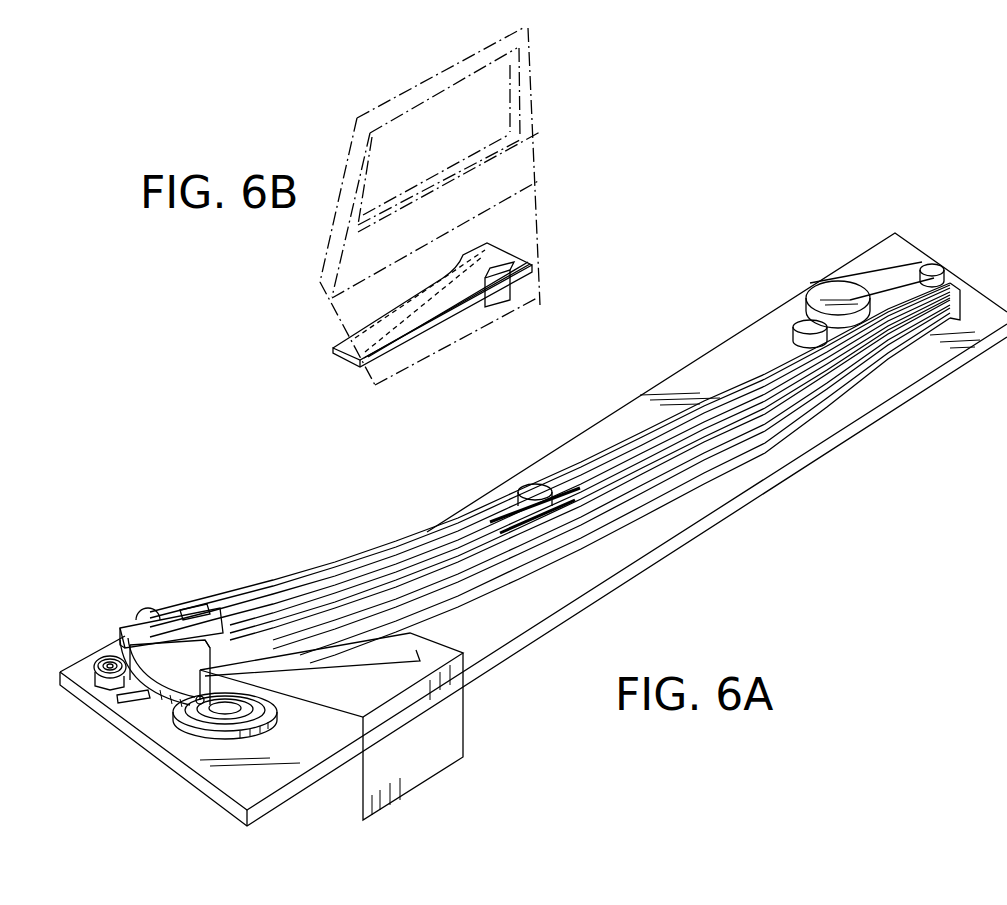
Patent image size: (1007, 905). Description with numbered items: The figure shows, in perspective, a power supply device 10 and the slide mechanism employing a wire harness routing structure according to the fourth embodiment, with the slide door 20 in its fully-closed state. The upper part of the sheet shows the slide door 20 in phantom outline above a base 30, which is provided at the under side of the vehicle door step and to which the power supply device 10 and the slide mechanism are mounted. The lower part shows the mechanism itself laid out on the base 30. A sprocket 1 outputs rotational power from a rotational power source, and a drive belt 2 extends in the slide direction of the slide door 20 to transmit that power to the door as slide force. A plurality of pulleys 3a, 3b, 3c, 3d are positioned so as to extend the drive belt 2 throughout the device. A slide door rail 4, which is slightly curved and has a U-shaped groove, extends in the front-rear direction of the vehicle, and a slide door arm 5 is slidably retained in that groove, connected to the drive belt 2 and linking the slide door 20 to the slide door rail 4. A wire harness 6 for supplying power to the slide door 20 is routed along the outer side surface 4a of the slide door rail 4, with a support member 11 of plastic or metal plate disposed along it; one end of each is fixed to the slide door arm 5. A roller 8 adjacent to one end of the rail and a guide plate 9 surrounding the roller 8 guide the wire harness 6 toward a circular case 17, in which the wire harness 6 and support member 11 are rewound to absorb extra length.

In FIG. 6A, the sprocket 1 is at (830, 292).
In FIG. 6A, the drive belt 2 is at (613, 463).
In FIG. 6A, the pulley 3a is at (148, 610).
In FIG. 6A, the pulley 3b is at (530, 490).
In FIG. 6A, the pulley 3c is at (808, 325).
In FIG. 6A, the pulley 3d is at (933, 268).
In FIG. 6A, the slide door rail 4 is at (740, 433).
In FIG. 6A, the outer side surface 4a is at (692, 450).
In FIG. 6B, the slide door arm 5 is at (505, 290).
In FIG. 6A, the slide door arm 5 is at (462, 723).
In FIG. 6A, the wire harness 6 is at (185, 712).
In FIG. 6A, the roller 8 is at (102, 660).
In FIG. 6A, the guide plate 9 is at (97, 688).
In FIG. 6B, the power supply device 10 is at (416, 326).
In FIG. 6A, the power supply device 10 is at (421, 491).
In FIG. 6A, the support member 11 is at (200, 710).
In FIG. 6A, the circular case 17 is at (228, 740).
In FIG. 6B, the slide door 20 is at (543, 127).
In FIG. 6B, the base 30 is at (512, 262).
In FIG. 6A, the base 30 is at (878, 383).